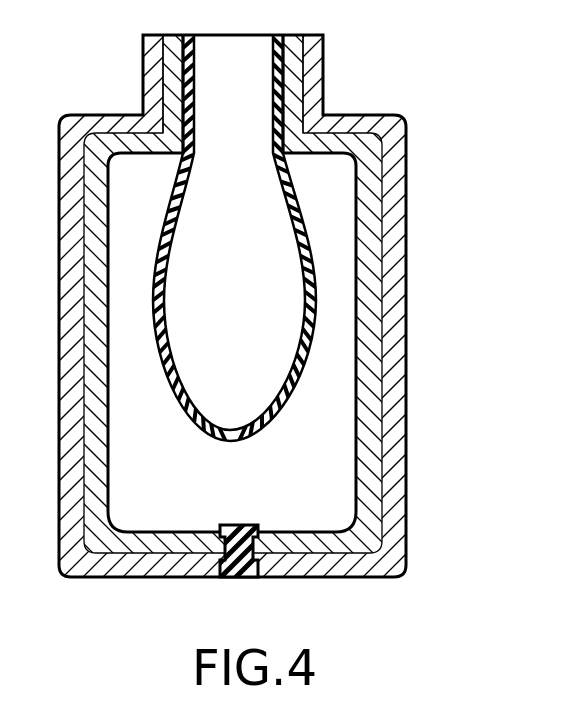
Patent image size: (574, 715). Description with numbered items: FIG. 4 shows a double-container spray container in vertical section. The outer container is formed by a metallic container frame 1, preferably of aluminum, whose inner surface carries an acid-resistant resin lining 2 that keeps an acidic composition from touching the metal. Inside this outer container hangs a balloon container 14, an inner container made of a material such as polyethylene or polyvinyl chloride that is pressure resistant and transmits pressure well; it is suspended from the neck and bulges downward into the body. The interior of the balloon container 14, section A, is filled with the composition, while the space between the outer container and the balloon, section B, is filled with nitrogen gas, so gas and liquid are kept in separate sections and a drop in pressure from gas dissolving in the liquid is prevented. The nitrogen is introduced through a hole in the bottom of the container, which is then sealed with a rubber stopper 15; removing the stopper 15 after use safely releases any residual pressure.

The container frame 1 is at (390, 248).
The acid-resistant resin lining 2 is at (370, 337).
The balloon container 14 is at (293, 198).
The rubber stopper 15 is at (239, 579).
The section A is at (273, 345).
The section B is at (325, 438).